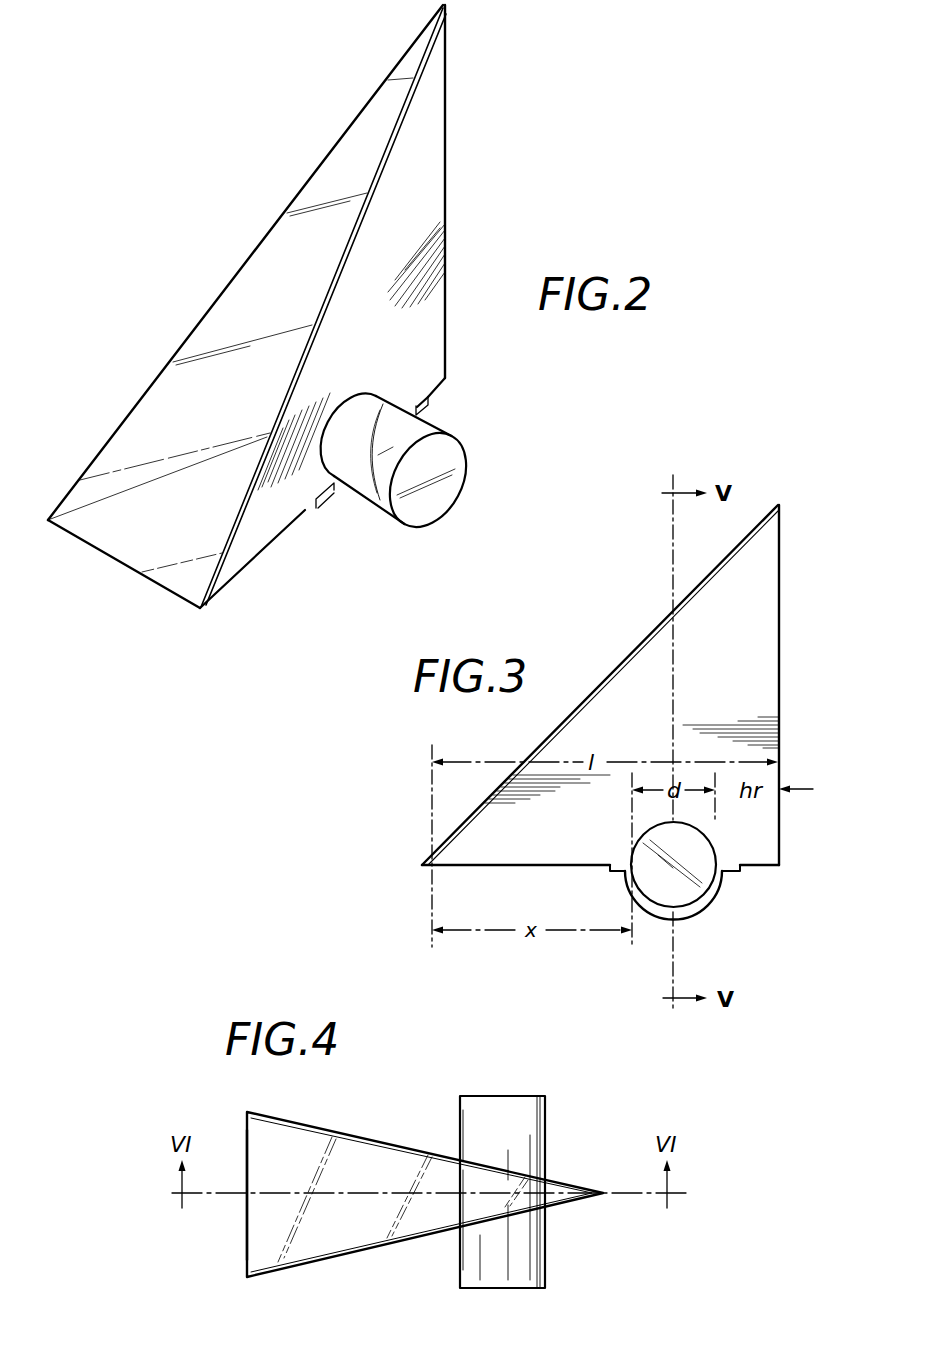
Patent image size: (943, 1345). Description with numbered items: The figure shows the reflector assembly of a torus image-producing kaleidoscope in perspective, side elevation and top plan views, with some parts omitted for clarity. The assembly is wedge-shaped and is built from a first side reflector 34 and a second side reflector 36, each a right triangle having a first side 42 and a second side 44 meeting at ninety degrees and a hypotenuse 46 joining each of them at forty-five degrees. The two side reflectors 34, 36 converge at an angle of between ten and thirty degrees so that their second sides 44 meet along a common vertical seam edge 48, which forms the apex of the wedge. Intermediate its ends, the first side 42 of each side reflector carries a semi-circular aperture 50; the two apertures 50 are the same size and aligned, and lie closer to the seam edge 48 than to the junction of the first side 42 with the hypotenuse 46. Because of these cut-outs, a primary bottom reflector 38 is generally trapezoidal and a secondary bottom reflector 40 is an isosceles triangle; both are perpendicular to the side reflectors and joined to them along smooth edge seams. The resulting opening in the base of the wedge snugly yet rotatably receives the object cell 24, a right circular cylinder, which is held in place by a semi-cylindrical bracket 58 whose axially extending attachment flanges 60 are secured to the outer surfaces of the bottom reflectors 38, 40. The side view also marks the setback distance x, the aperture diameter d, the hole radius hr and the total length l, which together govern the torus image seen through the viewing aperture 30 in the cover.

In FIG. 2, the object cell 24 is at (435, 502).
In FIG. 4, the viewing aperture 30 is at (352, 1135).
In FIG. 2, the first side reflector 34 is at (405, 213).
In FIG. 3, the first side reflector 34 is at (747, 617).
In FIG. 4, the first side reflector 34 is at (352, 1250).
In FIG. 2, the second side reflector 36 is at (148, 448).
In FIG. 3, the primary bottom reflector 38 is at (502, 867).
In FIG. 3, the secondary bottom reflector 40 is at (768, 867).
In FIG. 2, the first side 42 is at (262, 547).
In FIG. 2, the second side 44 is at (446, 100).
In FIG. 2, the hypotenuse 46 is at (313, 345).
In FIG. 2, the seam edge 48 is at (445, 155).
In FIG. 3, the seam edge 48 is at (778, 682).
In FIG. 2, the semi-circular aperture 50 is at (375, 391).
In FIG. 3, the semi-cylindrical bracket 58 is at (690, 910).
In FIG. 3, the attachment flanges 60 is at (612, 873).